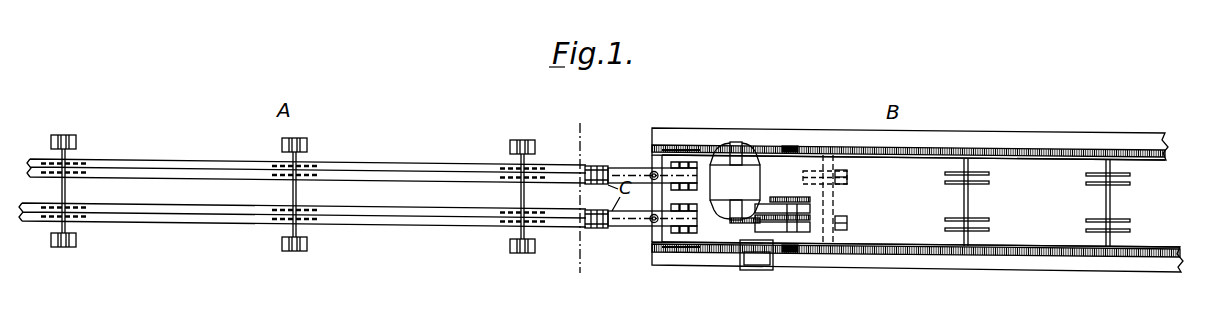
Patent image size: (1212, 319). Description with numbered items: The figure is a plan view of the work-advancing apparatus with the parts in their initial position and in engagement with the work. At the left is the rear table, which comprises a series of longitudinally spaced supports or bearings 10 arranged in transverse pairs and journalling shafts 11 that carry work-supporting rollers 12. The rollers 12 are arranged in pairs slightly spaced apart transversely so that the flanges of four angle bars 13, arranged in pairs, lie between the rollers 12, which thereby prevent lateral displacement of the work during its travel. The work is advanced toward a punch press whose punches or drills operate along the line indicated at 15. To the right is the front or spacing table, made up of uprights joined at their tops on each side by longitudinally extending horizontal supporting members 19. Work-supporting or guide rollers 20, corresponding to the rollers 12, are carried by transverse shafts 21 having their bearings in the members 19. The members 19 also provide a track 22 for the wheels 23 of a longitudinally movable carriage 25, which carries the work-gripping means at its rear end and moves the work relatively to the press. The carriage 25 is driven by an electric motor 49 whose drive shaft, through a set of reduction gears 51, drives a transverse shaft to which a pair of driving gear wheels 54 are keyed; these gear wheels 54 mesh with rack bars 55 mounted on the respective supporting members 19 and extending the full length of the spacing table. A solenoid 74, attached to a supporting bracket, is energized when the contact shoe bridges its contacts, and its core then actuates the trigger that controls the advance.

The supports or bearings 10 is at (77, 137).
The shafts 11 is at (66, 190).
The work-supporting rollers 12 is at (82, 161).
The angle bars 13 is at (216, 179).
The line of punch or drill operation 15 is at (581, 130).
The supporting members 19 is at (961, 140).
The work-supporting or guide rollers 20 is at (989, 174).
The transverse shafts 21 is at (970, 202).
The track 22 is at (918, 158).
The wheels 23 is at (667, 148).
The carriage 25 is at (808, 178).
The electric motor 49 is at (735, 182).
The reduction gears 51 is at (800, 209).
The driving gear wheels 54 is at (790, 146).
The rack bars 55 is at (1058, 150).
The solenoid 74 is at (758, 265).